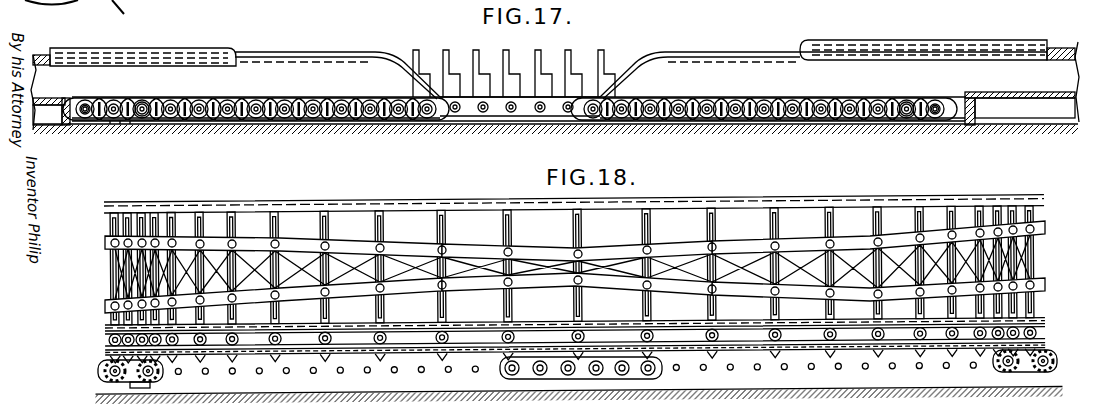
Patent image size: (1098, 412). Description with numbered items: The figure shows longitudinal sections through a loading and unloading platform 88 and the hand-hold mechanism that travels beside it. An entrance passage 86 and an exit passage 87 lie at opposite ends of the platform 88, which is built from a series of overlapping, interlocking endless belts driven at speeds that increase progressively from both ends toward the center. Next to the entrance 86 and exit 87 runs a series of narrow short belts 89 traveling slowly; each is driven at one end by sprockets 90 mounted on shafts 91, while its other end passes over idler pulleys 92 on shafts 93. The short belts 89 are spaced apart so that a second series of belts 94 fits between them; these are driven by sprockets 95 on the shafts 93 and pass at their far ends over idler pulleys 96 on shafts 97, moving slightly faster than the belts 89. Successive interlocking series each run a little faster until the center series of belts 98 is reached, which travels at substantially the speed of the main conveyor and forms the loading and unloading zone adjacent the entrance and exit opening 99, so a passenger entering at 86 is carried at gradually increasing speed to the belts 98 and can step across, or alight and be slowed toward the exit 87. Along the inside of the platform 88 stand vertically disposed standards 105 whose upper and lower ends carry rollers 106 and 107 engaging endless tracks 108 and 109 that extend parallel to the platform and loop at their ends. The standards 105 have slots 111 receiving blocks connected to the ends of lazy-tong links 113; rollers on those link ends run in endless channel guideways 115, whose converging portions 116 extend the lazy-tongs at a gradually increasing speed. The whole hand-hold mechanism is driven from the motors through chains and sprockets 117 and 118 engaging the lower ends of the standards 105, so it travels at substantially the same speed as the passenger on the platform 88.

In FIG. 17, the entrance passage 86 is at (42, 55).
In FIG. 17, the exit passage 87 is at (1005, 94).
In FIG. 17, the loading and unloading platform 88 is at (518, 99).
In FIG. 17, the short belts 89 is at (105, 121).
In FIG. 17, the sprockets 90 is at (112, 112).
In FIG. 17, the shafts 91 is at (80, 100).
In FIG. 18, the shafts 91 is at (123, 365).
In FIG. 17, the idler pulleys 92 is at (920, 118).
In FIG. 17, the shafts 93 is at (125, 112).
In FIG. 17, the second series of belts 94 is at (140, 124).
In FIG. 17, the sprockets 95 is at (120, 123).
In FIG. 17, the idler pulleys 96 is at (135, 125).
In FIG. 17, the shafts 97 is at (152, 100).
In FIG. 17, the center series of belts 98 is at (500, 112).
In FIG. 17, the entrance and exit opening 99 is at (593, 92).
In FIG. 18, the standards 105 is at (112, 214).
In FIG. 18, the rollers 106 is at (292, 206).
In FIG. 18, the rollers 107 is at (322, 350).
In FIG. 17, the endless track 108 is at (1040, 5).
In FIG. 18, the endless track 108 is at (403, 203).
In FIG. 18, the endless track 109 is at (365, 345).
In FIG. 18, the slots 111 is at (277, 222).
In FIG. 18, the lazy-tong links 113 is at (137, 265).
In FIG. 18, the endless channel guideways 115 is at (540, 252).
In FIG. 18, the converging portions 116 is at (348, 252).
In FIG. 18, the chains 117 is at (160, 386).
In FIG. 18, the sprockets 118 is at (125, 383).